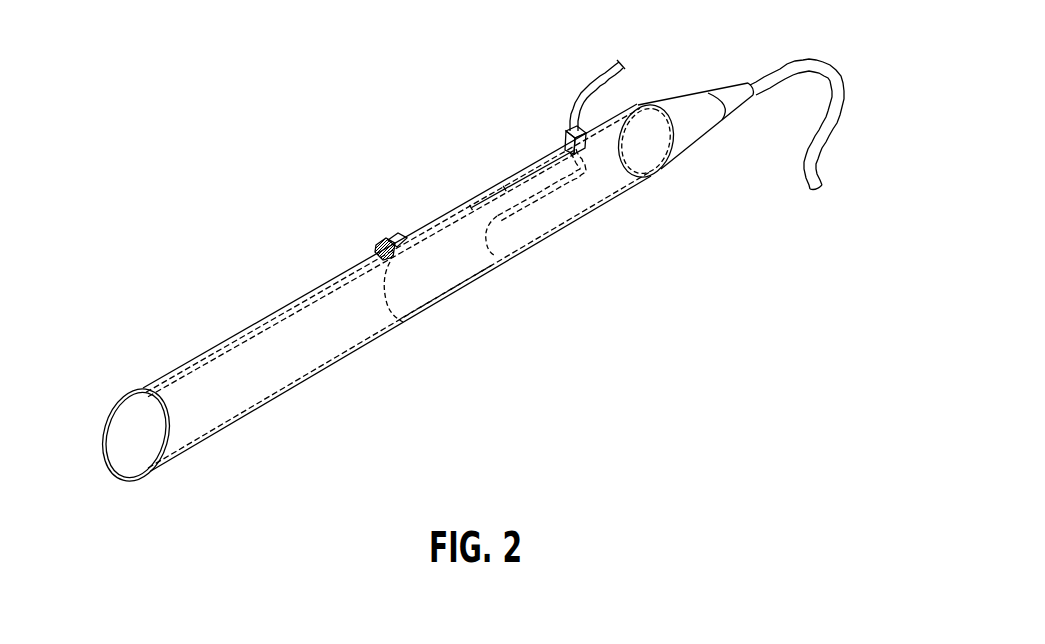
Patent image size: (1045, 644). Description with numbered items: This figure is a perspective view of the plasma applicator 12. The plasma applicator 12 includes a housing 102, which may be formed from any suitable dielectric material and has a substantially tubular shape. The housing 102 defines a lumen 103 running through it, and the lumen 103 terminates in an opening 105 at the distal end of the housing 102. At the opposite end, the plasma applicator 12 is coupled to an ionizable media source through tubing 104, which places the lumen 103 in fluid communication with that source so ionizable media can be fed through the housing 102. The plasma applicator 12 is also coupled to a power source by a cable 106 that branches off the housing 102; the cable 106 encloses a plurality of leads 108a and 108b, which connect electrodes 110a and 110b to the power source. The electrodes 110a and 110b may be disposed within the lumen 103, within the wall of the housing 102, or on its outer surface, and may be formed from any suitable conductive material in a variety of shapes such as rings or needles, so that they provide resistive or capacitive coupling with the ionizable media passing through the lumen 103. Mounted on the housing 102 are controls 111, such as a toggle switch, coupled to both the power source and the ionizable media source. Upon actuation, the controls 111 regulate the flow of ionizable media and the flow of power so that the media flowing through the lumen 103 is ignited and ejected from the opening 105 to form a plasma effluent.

The plasma applicator 12 is at (293, 148).
The housing 102 is at (624, 200).
The lumen 103 is at (454, 279).
The tubing 104 is at (841, 96).
The opening 105 is at (134, 440).
The cable 106 is at (598, 100).
The lead 108a is at (503, 197).
The lead 108b is at (538, 206).
The electrode 110a is at (403, 322).
The electrode 110b is at (494, 256).
The controls 111 is at (398, 235).